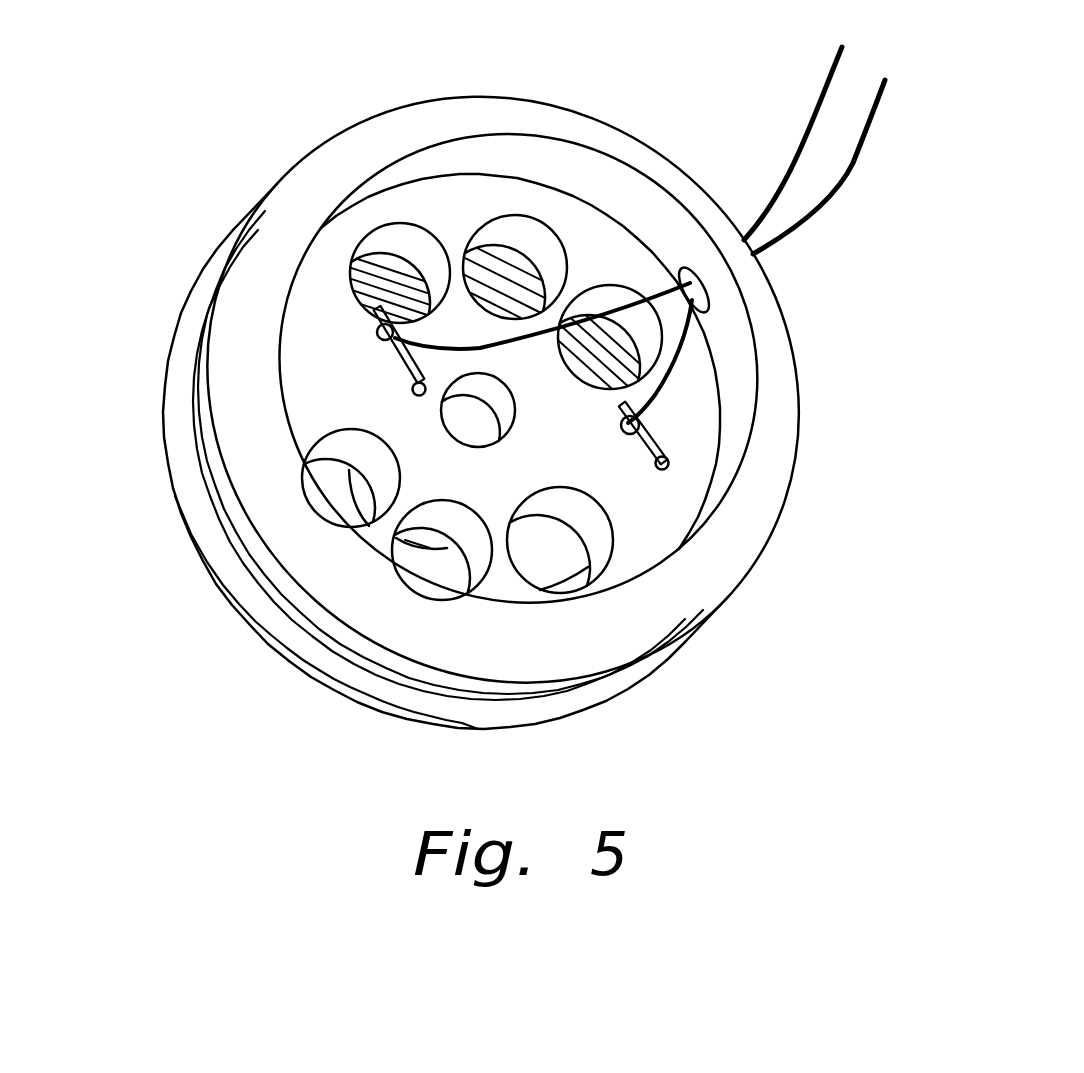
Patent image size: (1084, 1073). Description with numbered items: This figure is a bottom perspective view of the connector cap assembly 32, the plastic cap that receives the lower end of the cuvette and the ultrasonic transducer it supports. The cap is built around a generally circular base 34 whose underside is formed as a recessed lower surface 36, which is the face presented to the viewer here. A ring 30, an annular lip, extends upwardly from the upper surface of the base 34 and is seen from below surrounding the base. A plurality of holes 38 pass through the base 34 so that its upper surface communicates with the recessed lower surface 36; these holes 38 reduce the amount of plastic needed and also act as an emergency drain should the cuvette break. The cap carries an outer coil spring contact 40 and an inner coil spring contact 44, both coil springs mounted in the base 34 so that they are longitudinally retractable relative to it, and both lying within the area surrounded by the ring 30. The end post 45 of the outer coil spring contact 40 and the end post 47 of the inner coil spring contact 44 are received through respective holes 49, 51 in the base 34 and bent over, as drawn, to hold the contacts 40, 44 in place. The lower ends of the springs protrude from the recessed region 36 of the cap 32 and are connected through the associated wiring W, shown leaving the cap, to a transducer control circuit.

The ring 30 is at (263, 645).
The connector cap assembly 32 is at (617, 664).
The base 34 is at (737, 537).
The recessed lower surface 36 is at (477, 200).
The holes 38 is at (550, 247).
The outer coil spring contact 40 is at (370, 273).
The inner coil spring contact 44 is at (347, 490).
The end post 45 is at (410, 372).
The end post 47 is at (657, 438).
The hole 49 is at (412, 391).
The hole 51 is at (667, 460).
The wiring W is at (823, 92).